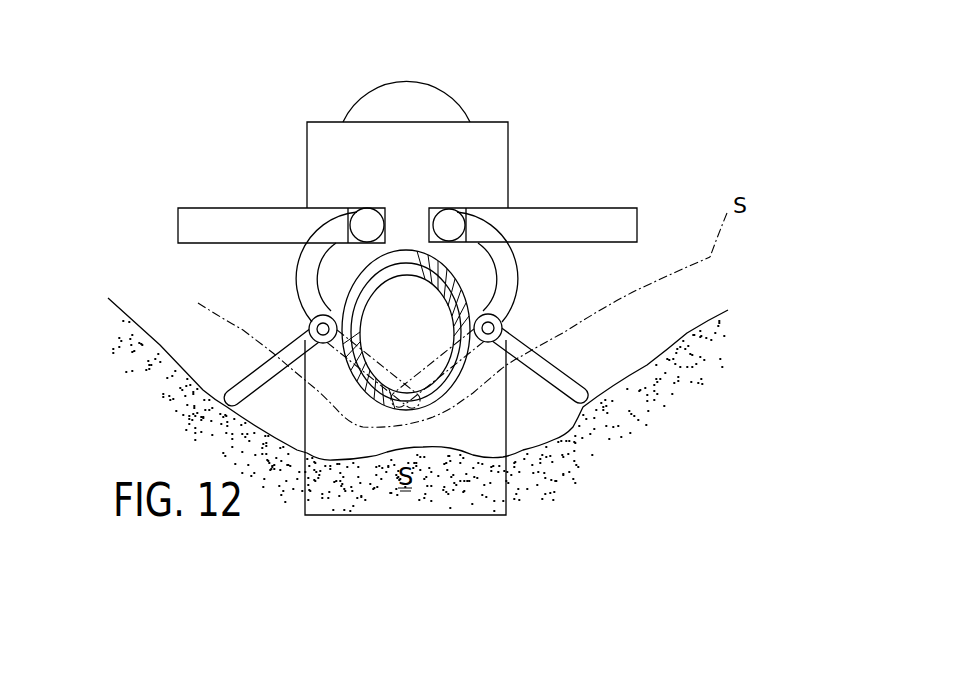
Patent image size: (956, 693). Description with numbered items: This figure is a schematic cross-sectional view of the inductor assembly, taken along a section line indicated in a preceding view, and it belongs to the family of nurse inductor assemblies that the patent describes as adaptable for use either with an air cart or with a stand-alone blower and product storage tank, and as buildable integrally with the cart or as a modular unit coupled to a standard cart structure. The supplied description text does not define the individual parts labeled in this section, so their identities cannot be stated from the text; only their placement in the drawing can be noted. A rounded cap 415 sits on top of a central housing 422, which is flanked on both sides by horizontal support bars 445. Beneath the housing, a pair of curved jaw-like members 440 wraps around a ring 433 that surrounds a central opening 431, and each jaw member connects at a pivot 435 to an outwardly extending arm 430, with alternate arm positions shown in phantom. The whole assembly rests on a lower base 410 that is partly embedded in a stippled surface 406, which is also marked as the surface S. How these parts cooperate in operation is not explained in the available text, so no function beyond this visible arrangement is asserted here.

The surface 406 is at (487, 471).
The base 410 is at (490, 517).
The dome cap 415 is at (408, 80).
The housing body 422 is at (529, 189).
The arms 430 is at (245, 377).
The opening 431 is at (407, 252).
The ring 433 is at (468, 262).
The pivots 435 is at (310, 320).
The jaw members 440 is at (295, 282).
The support bars 445 is at (247, 208).